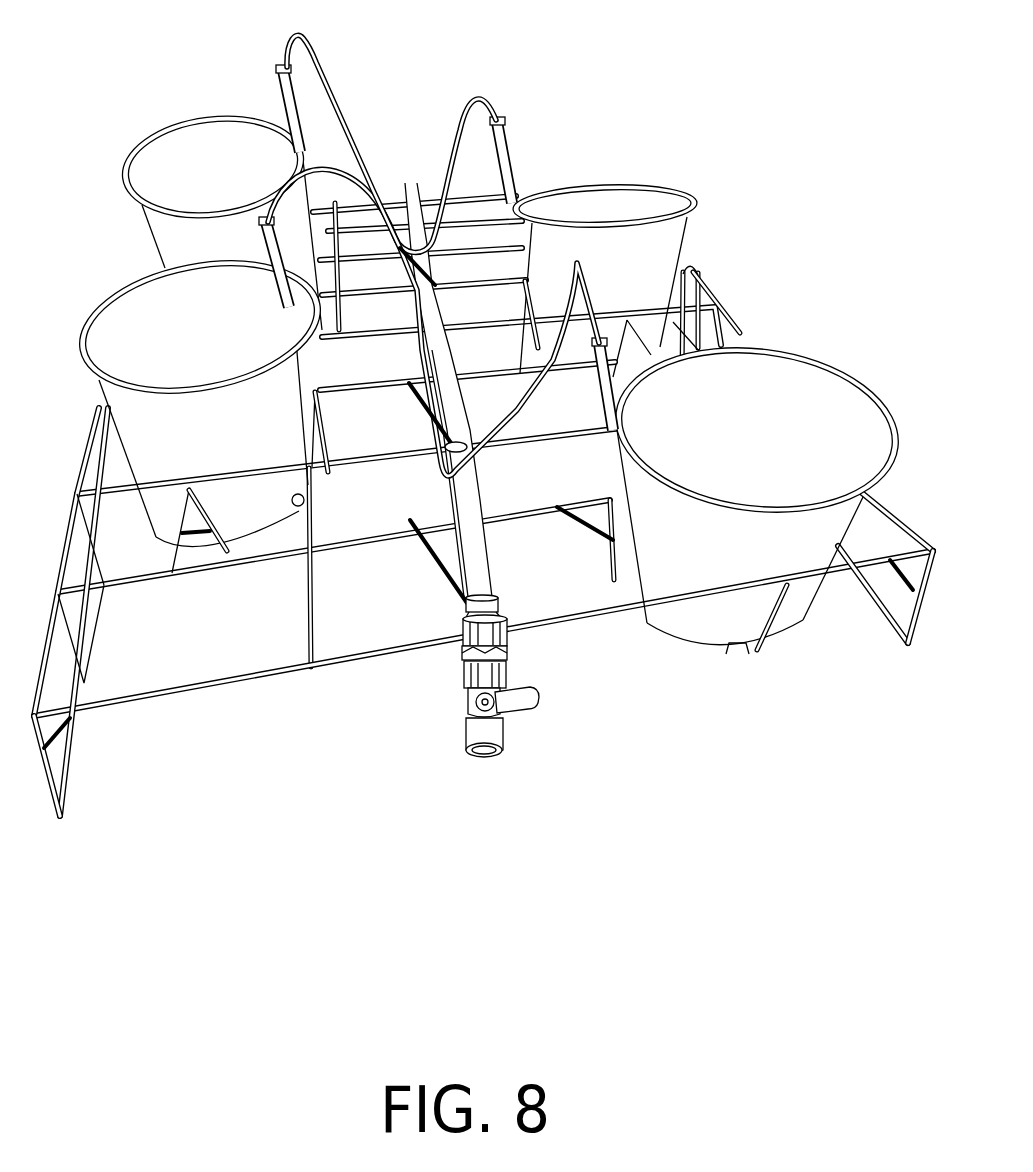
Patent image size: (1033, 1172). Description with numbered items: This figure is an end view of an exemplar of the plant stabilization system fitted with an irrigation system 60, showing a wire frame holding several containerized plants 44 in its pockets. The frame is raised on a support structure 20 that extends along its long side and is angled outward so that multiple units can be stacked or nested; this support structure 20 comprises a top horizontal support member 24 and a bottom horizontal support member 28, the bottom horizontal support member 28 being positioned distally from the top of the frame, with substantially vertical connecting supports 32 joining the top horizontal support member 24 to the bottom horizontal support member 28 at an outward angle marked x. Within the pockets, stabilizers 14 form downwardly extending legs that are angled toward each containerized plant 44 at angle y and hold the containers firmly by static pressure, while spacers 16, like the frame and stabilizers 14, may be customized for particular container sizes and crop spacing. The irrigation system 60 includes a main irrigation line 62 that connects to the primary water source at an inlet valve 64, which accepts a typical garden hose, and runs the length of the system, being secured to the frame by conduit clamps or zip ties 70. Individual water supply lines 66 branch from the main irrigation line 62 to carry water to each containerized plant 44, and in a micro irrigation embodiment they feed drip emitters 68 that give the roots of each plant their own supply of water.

The stabilizers 14 is at (521, 279).
The spacers 16 is at (457, 327).
The support structure 20 is at (733, 332).
The top horizontal support member 24 is at (902, 537).
The bottom horizontal support member 28 is at (880, 605).
The substantially vertical connecting supports 32 is at (917, 627).
The containerized plants 44 is at (199, 243).
The irrigation system 60 is at (470, 557).
The main irrigation line 62 is at (478, 497).
The inlet valve 64 is at (505, 683).
The individual water supply lines 66 is at (420, 348).
The drip emitters 68 is at (284, 272).
The conduit clamps or zip ties 70 is at (412, 280).